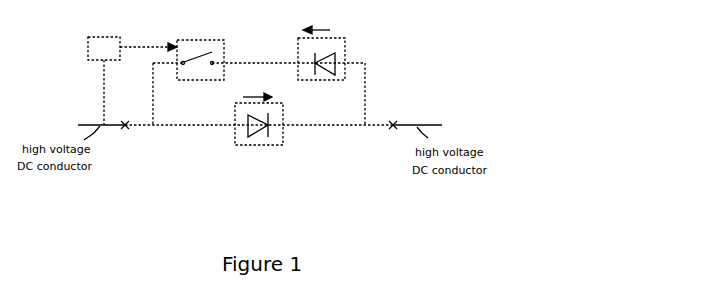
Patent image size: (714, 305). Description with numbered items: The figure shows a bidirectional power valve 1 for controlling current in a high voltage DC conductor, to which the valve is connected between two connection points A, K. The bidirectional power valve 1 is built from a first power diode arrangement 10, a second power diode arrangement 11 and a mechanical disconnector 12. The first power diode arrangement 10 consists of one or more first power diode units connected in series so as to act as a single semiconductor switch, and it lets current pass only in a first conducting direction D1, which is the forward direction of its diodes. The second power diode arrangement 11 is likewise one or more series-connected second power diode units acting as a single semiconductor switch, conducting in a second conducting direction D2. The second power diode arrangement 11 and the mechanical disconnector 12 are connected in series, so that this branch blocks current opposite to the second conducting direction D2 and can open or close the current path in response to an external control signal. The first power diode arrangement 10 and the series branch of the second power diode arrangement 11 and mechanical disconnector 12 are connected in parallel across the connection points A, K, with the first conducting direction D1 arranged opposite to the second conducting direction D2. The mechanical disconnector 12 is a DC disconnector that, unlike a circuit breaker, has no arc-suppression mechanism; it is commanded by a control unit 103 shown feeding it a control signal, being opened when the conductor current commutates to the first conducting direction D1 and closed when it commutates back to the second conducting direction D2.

The bidirectional power valve 1 is at (344, 192).
The first power diode arrangement 10 is at (242, 146).
The second power diode arrangement 11 is at (342, 37).
The mechanical disconnector 12 is at (218, 41).
The control unit 103 is at (132, 81).
The connection point A is at (125, 134).
The connection point K is at (393, 133).
The first conducting direction D1 is at (257, 92).
The second conducting direction D2 is at (316, 23).